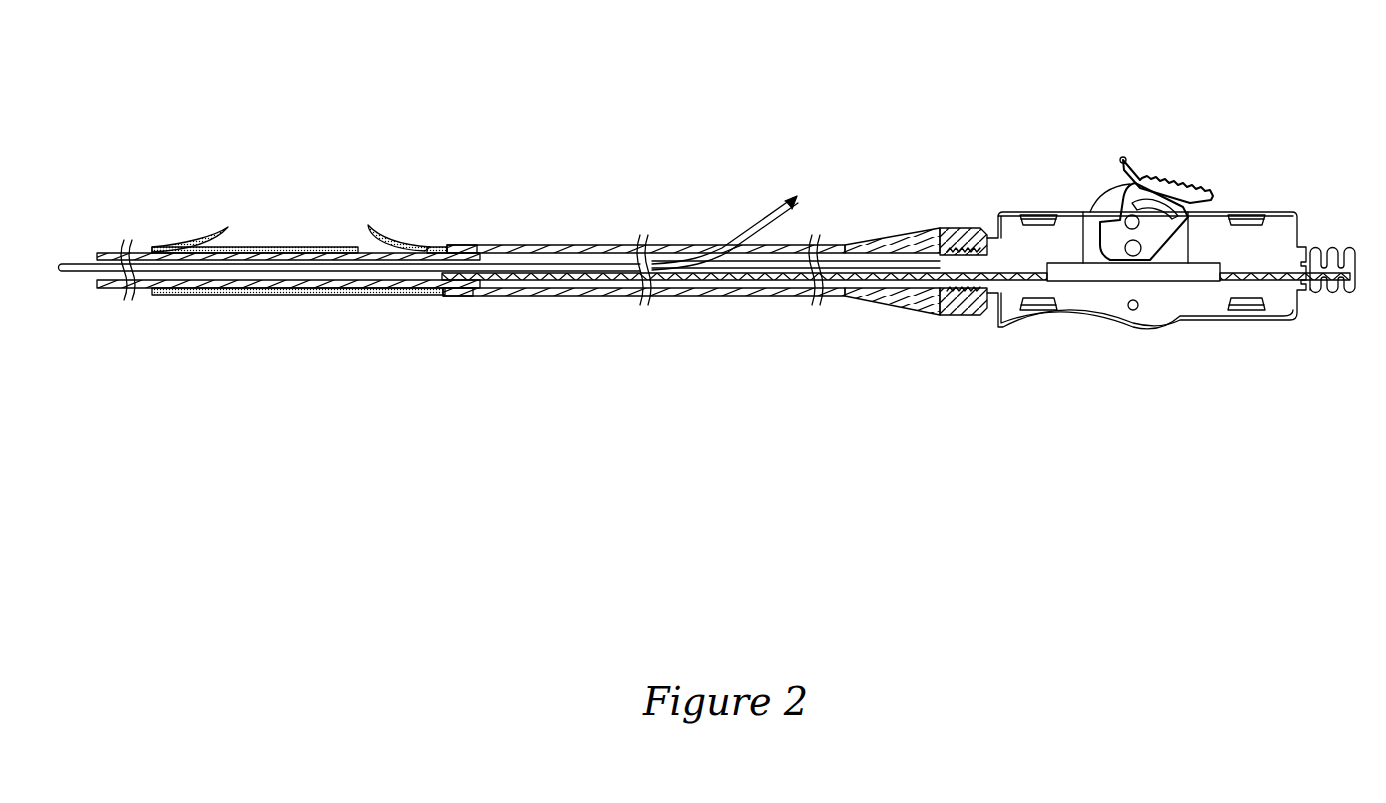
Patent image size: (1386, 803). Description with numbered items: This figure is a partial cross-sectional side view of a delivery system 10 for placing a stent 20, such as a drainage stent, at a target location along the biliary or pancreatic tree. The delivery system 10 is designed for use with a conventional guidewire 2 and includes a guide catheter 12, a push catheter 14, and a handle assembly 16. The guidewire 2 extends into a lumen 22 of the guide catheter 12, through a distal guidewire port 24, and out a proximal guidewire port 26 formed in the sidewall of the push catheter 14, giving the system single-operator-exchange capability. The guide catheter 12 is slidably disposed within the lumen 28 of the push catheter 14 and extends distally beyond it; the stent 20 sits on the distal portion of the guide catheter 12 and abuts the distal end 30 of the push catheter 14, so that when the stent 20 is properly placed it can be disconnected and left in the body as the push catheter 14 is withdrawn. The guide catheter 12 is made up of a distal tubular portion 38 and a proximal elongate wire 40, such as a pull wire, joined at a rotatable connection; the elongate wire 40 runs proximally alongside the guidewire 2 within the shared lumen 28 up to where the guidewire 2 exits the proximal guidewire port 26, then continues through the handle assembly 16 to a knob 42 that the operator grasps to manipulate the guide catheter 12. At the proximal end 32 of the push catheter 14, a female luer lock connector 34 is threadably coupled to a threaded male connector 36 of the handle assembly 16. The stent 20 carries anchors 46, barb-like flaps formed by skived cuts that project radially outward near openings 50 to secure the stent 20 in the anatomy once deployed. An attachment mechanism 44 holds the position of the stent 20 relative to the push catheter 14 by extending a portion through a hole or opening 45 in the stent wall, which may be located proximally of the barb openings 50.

The guidewire 2 is at (88, 268).
The delivery system 10 is at (746, 77).
The guide catheter 12 is at (288, 269).
The push catheter 14 is at (582, 297).
The handle assembly 16 is at (1091, 354).
The stent 20 is at (300, 294).
The lumen 22 is at (283, 257).
The distal guidewire port 24 is at (90, 282).
The proximal guidewire port 26 is at (721, 246).
The lumen 28 is at (790, 262).
The distal end 30 is at (445, 297).
The proximal end 32 is at (944, 234).
The female luer lock connector 34 is at (942, 306).
The threaded male connector 36 is at (962, 262).
The distal tubular portion 38 is at (232, 294).
The elongate wire 40 is at (680, 281).
The knob 42 is at (1332, 252).
The attachment mechanism 44 is at (430, 249).
The opening 45 is at (441, 251).
The anchors 46 is at (212, 235).
The opening 50 is at (224, 247).